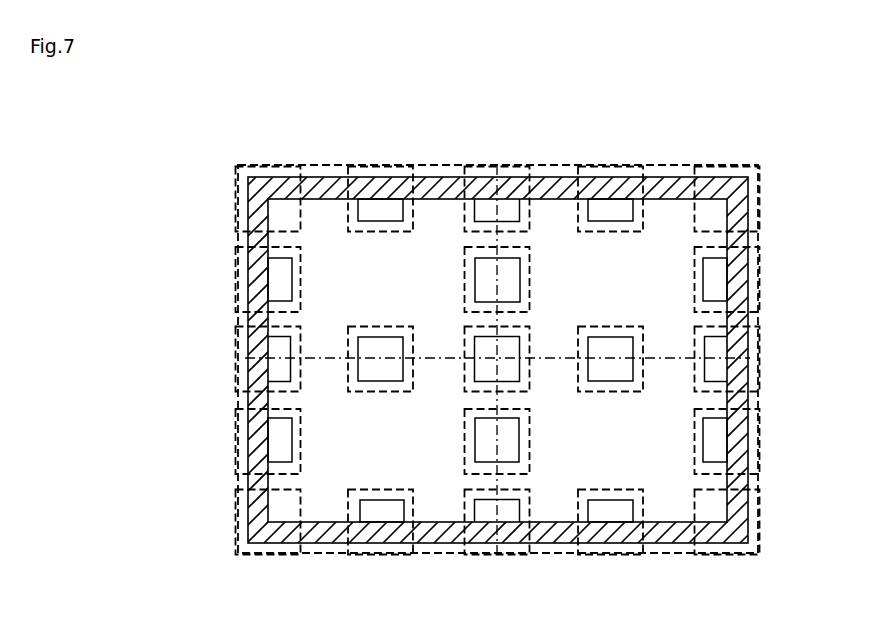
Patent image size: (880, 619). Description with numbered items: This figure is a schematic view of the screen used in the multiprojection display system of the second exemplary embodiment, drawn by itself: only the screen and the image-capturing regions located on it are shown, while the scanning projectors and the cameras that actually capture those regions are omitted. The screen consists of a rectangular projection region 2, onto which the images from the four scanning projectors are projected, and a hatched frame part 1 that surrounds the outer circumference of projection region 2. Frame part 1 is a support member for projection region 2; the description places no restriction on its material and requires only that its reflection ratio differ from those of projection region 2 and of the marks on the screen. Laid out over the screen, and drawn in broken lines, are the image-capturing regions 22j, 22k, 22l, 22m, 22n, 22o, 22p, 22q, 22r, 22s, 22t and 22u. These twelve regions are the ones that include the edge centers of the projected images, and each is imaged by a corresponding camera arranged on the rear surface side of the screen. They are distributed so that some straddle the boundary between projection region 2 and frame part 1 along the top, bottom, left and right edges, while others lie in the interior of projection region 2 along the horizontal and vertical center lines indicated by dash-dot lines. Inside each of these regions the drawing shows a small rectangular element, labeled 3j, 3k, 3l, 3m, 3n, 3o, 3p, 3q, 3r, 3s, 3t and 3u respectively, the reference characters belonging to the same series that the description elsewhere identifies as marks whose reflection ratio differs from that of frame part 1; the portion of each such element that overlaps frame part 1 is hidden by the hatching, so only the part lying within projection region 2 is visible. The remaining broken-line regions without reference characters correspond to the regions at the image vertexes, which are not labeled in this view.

The frame part 1 is at (742, 318).
The projection region 2 is at (663, 237).
The electrode 3j is at (383, 180).
The electrode 3k is at (628, 178).
The electrode 3l is at (280, 282).
The electrode 3m is at (520, 290).
The electrode 3n is at (717, 267).
The electrode 3o is at (383, 380).
The electrode 3p is at (610, 380).
The electrode 3q is at (283, 450).
The electrode 3r is at (473, 442).
The electrode 3s is at (723, 425).
The electrode 3t is at (393, 512).
The electrode 3u is at (622, 510).
The image-capturing region 22j is at (358, 178).
The image-capturing region 22k is at (617, 175).
The image-capturing region 22l is at (240, 265).
The image-capturing region 22m is at (530, 265).
The image-capturing region 22n is at (758, 275).
The image-capturing region 22o is at (355, 328).
The image-capturing region 22p is at (585, 326).
The image-capturing region 22q is at (240, 440).
The image-capturing region 22r is at (527, 447).
The image-capturing region 22s is at (760, 435).
The image-capturing region 22t is at (377, 548).
The image-capturing region 22u is at (610, 548).